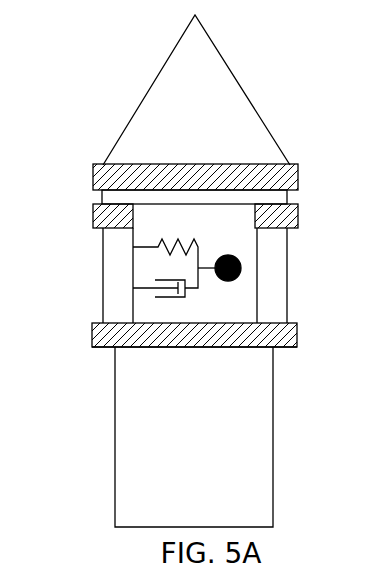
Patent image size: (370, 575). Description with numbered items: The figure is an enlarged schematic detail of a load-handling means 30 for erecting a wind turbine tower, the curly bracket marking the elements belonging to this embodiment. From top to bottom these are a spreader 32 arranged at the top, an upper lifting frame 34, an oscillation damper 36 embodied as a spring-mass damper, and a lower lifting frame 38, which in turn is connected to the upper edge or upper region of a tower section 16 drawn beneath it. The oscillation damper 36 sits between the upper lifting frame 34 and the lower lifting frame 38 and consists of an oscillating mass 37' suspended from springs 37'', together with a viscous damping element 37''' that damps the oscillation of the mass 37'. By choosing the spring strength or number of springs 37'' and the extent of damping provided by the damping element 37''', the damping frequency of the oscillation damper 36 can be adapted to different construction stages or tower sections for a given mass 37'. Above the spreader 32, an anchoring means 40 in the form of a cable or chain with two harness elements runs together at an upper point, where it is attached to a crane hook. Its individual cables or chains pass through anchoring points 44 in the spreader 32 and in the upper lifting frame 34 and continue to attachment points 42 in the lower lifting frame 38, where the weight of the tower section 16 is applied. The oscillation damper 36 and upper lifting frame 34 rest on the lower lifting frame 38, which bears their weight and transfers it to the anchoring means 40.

The tower section 16 is at (263, 412).
The load-handling means 30 is at (80, 165).
The spreader 32 is at (256, 163).
The upper lifting frame 34 is at (298, 213).
The oscillation damper 36 is at (243, 268).
The oscillating mass 37' is at (266, 262).
The springs 37'' is at (146, 170).
The viscous damping element 37''' is at (116, 342).
The lower lifting frame 38 is at (290, 312).
The anchoring means 40 is at (222, 60).
The attachment points 42 is at (300, 345).
The anchoring points 44 is at (302, 164).